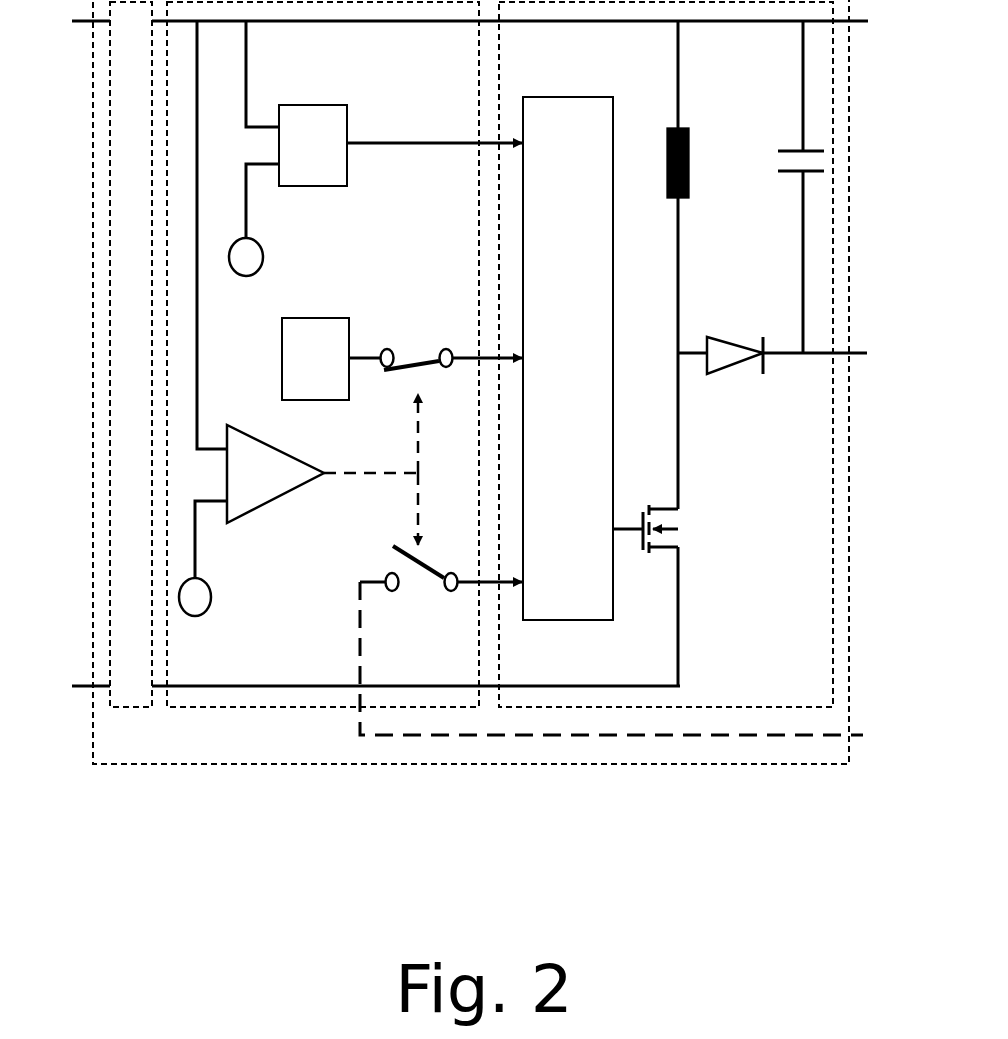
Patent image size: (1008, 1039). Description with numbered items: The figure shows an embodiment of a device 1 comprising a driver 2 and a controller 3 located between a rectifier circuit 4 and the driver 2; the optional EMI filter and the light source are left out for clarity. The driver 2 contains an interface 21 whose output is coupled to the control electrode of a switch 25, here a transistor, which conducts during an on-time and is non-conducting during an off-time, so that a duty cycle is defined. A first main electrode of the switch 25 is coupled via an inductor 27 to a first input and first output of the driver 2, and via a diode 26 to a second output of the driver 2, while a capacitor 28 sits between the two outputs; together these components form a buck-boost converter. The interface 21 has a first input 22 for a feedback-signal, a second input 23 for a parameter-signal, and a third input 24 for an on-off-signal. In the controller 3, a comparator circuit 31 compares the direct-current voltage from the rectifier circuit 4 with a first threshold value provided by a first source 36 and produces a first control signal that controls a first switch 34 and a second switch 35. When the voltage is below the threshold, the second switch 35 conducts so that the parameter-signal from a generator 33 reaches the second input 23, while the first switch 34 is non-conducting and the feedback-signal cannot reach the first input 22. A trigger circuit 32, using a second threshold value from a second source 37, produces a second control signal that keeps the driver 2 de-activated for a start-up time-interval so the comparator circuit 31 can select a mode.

The device 1 is at (802, 760).
The driver 2 is at (833, 529).
The controller 3 is at (210, 707).
The rectifier circuit 4 is at (128, 707).
The interface 21 is at (480, 381).
The first input 22 is at (517, 583).
The second input 23 is at (514, 359).
The third input 24 is at (461, 144).
The switch 25 is at (668, 529).
The diode 26 is at (772, 380).
The inductor 27 is at (695, 171).
The capacitor 28 is at (792, 182).
The comparator circuit 31 is at (288, 490).
The trigger circuit 32 is at (312, 186).
The generator 33 is at (315, 400).
The first switch 34 is at (611, 640).
The second switch 35 is at (417, 342).
The first source 36 is at (196, 622).
The second source 37 is at (246, 277).